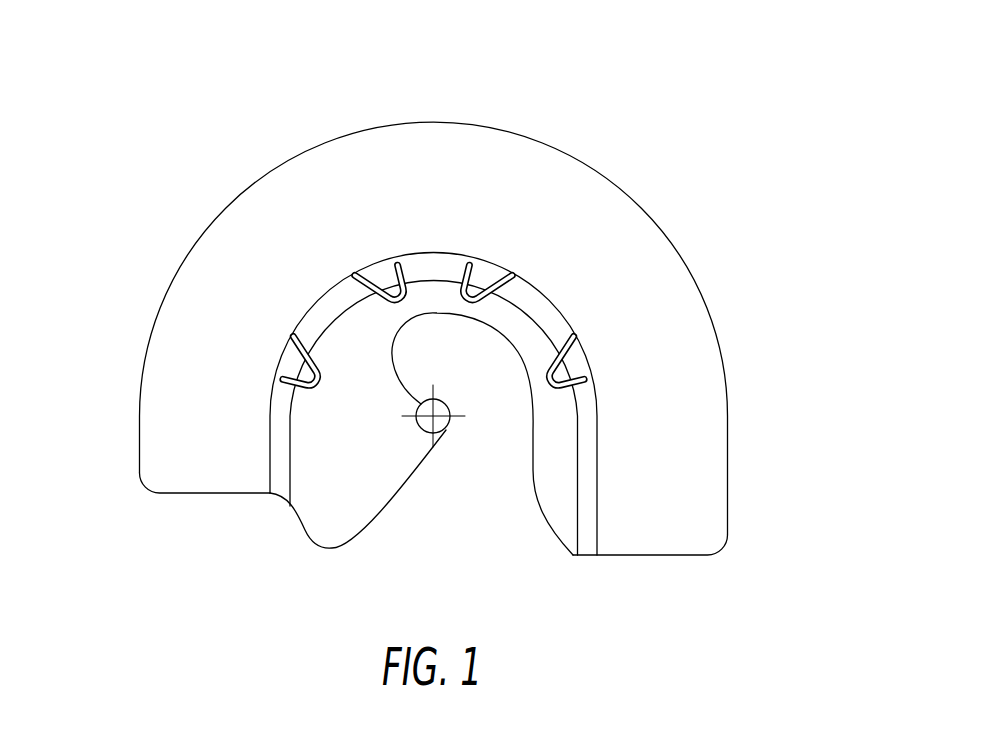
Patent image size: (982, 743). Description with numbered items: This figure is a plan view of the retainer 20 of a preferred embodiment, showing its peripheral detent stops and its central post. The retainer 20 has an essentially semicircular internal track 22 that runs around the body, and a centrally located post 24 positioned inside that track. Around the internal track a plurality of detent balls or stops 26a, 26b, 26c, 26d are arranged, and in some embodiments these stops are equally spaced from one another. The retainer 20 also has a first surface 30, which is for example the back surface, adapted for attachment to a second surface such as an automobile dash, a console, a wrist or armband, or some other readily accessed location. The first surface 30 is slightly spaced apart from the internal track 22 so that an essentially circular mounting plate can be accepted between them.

The retainer 20 is at (672, 115).
The internal track 22 is at (433, 262).
The post 24 is at (442, 419).
The detent ball or stop 26a is at (565, 361).
The detent ball or stop 26b is at (488, 282).
The detent ball or stop 26c is at (383, 282).
The detent ball or stop 26d is at (305, 361).
The first surface 30 is at (671, 495).